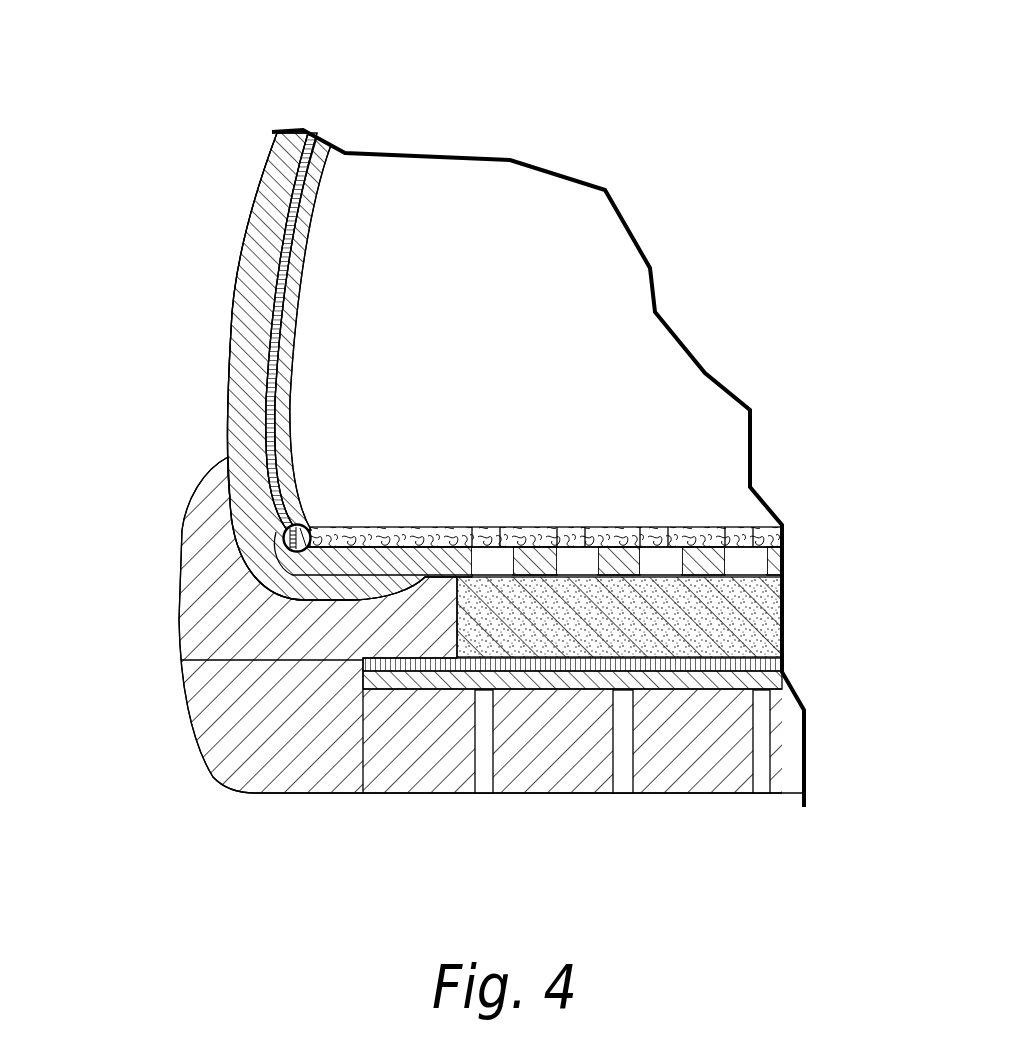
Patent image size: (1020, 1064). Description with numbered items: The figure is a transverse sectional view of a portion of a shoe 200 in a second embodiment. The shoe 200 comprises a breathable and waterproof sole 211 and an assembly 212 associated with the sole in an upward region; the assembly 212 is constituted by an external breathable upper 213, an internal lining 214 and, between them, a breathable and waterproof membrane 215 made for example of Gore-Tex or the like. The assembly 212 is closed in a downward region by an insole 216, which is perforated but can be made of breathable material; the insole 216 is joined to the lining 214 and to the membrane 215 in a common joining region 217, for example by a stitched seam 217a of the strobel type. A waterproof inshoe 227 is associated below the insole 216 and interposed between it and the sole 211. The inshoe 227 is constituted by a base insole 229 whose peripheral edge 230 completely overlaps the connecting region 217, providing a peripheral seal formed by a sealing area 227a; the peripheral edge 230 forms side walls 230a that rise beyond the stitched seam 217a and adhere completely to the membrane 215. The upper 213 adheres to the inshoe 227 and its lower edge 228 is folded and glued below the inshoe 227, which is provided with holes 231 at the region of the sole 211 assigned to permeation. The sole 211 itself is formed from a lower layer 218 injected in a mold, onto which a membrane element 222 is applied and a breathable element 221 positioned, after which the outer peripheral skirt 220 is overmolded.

The shoe 200 is at (656, 172).
The breathable and waterproof sole 211 is at (664, 801).
The assembly 212 is at (239, 259).
The external breathable upper 213 is at (270, 177).
The internal lining 214 is at (310, 197).
The breathable and waterproof membrane 215 is at (318, 140).
The insole 216 is at (622, 530).
The common joining region 217 is at (270, 554).
The stitched seam 217a is at (302, 525).
The lower layer 218 is at (788, 761).
The outer peripheral skirt 220 is at (220, 647).
The breathable element 221 is at (743, 637).
The membrane element 222 is at (534, 694).
The waterproof inshoe 227 is at (352, 577).
The sealing area 227a is at (262, 527).
The lower edge 228 is at (320, 587).
The base insole 229 is at (400, 562).
The peripheral edge 230 is at (257, 533).
The side walls 230a is at (267, 502).
The holes 231 is at (652, 562).